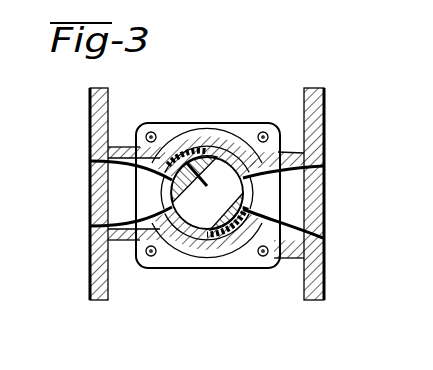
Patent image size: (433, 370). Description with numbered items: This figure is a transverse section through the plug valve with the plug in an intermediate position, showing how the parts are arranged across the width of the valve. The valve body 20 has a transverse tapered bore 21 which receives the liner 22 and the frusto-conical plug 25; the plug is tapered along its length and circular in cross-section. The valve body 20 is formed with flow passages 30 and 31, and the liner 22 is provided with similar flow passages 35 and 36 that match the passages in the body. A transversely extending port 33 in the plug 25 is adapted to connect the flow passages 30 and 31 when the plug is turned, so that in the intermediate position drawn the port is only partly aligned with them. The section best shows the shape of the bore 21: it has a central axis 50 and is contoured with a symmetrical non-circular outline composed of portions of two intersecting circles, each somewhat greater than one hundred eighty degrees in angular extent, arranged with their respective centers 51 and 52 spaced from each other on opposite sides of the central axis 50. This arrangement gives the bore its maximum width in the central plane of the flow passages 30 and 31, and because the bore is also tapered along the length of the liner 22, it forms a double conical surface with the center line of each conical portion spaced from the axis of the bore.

The valve body 20 is at (208, 186).
The transverse tapered bore 21 is at (230, 250).
The liner 22 is at (190, 150).
The frusto-conical plug 25 is at (212, 228).
The flow passage 30 is at (98, 203).
The flow passage 31 is at (323, 196).
The transversely extending port 33 is at (176, 246).
The flow passage 35 is at (155, 184).
The flow passage 36 is at (255, 198).
The central axis 50 is at (227, 147).
The center 51 is at (160, 203).
The center 52 is at (258, 197).